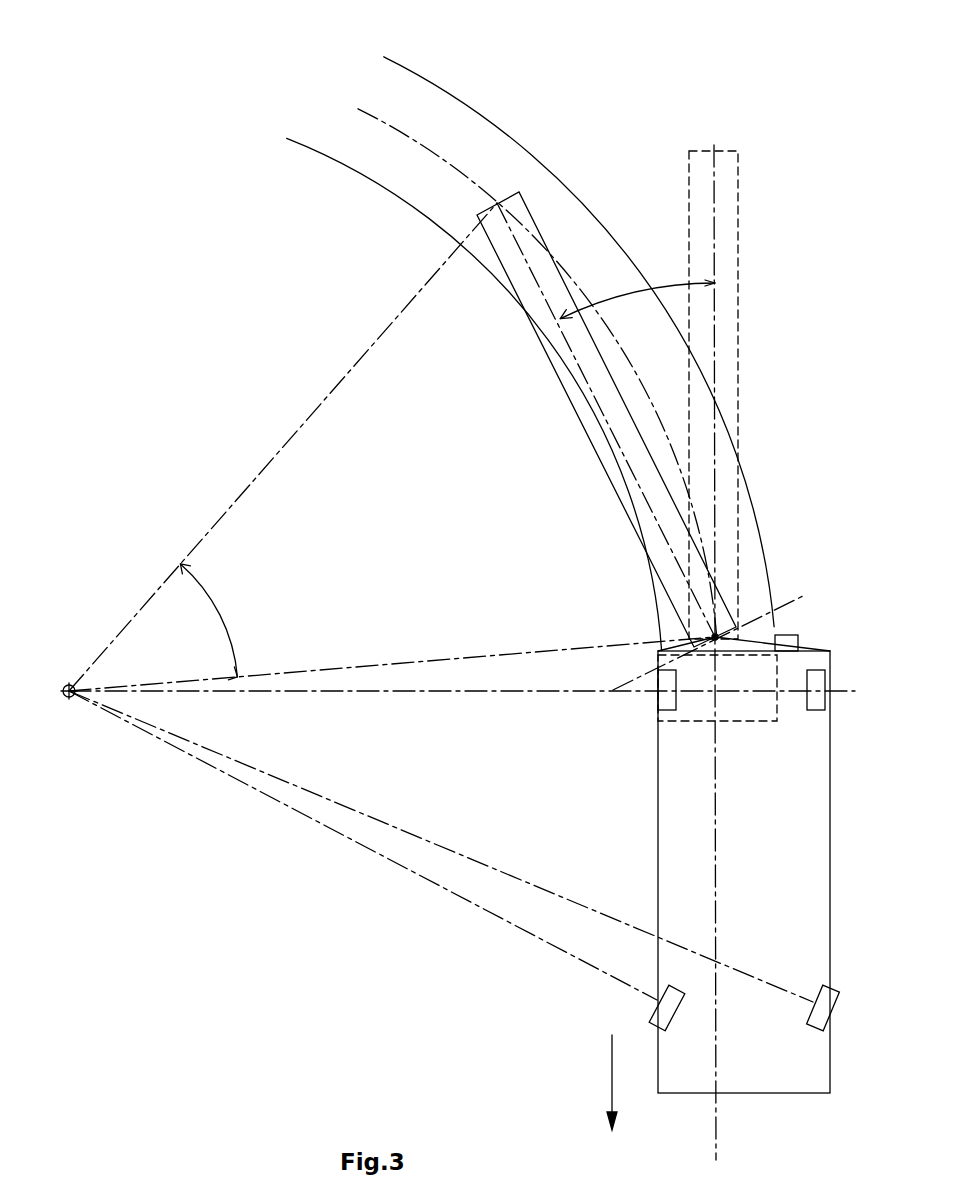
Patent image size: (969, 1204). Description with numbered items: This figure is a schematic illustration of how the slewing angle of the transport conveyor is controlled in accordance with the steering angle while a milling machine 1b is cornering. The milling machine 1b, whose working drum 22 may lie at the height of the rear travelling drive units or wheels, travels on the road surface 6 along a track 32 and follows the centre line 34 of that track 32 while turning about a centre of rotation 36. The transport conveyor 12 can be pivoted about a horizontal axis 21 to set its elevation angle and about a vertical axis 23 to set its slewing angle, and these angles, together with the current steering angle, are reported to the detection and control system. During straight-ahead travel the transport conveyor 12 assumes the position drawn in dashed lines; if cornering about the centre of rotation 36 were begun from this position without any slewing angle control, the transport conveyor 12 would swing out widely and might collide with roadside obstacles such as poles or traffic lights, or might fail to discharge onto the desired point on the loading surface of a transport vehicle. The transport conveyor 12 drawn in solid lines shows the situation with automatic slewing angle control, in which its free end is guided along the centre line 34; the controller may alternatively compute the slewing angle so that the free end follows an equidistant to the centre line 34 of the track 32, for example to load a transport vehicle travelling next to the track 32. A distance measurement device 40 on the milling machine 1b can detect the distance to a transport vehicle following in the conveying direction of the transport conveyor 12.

The road surface 6 is at (532, 108).
The transport conveyor 12 is at (697, 205).
The horizontal axis 21 is at (780, 602).
The working drum 22 is at (758, 714).
The vertical axis 23 is at (712, 636).
The track 32 is at (328, 157).
The centre line 34 is at (428, 150).
The centre of rotation 36 is at (66, 687).
The distance measurement device 40 is at (789, 638).
The milling machine 1b is at (612, 826).